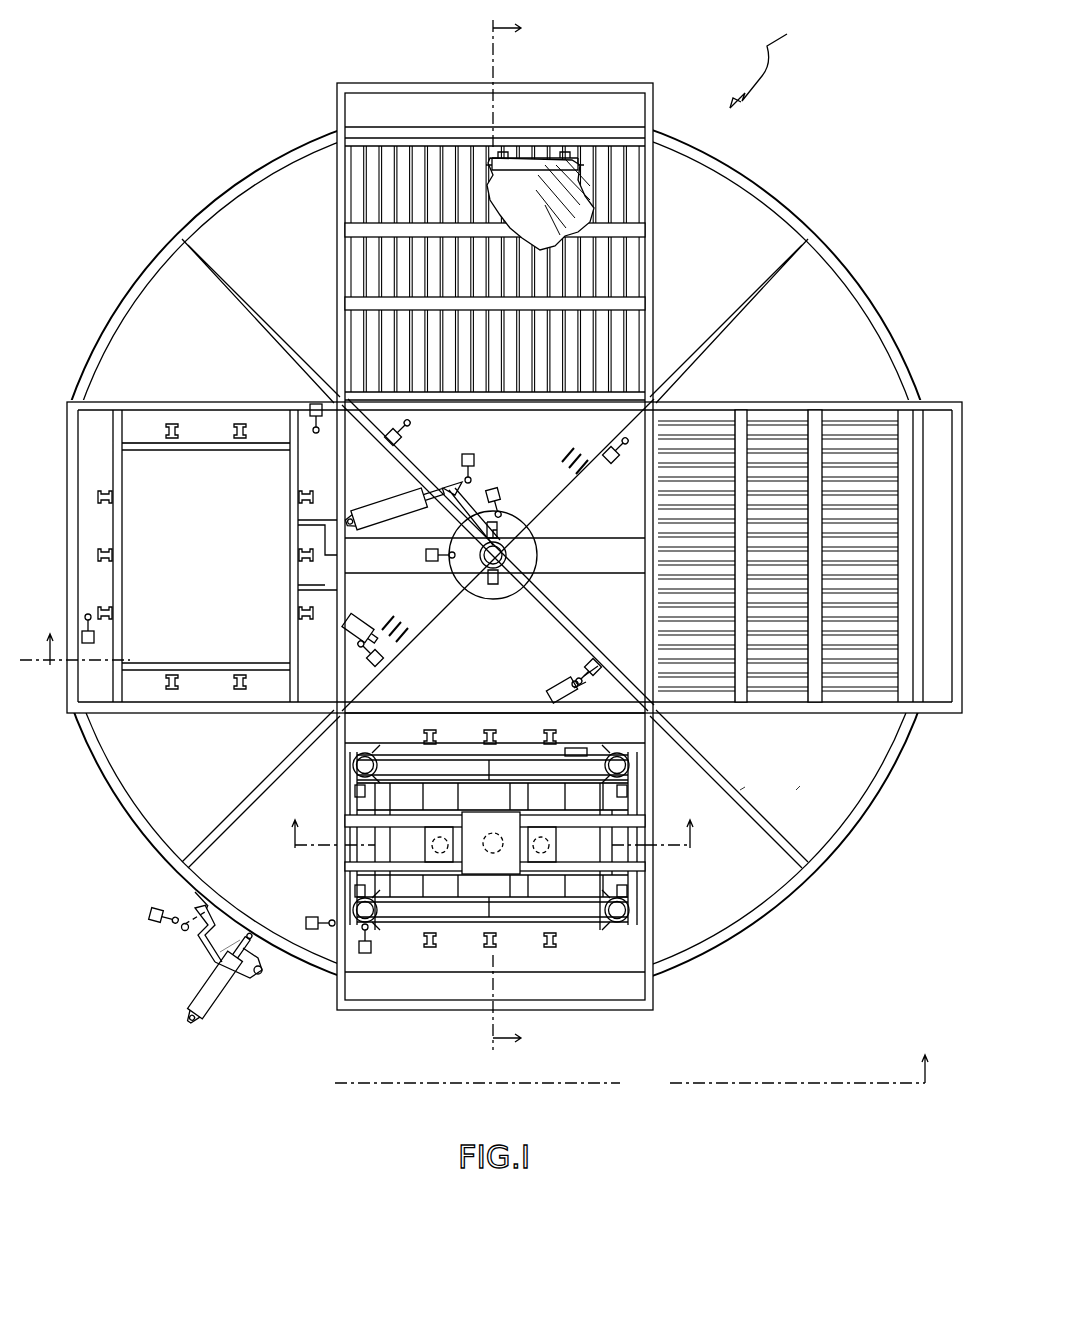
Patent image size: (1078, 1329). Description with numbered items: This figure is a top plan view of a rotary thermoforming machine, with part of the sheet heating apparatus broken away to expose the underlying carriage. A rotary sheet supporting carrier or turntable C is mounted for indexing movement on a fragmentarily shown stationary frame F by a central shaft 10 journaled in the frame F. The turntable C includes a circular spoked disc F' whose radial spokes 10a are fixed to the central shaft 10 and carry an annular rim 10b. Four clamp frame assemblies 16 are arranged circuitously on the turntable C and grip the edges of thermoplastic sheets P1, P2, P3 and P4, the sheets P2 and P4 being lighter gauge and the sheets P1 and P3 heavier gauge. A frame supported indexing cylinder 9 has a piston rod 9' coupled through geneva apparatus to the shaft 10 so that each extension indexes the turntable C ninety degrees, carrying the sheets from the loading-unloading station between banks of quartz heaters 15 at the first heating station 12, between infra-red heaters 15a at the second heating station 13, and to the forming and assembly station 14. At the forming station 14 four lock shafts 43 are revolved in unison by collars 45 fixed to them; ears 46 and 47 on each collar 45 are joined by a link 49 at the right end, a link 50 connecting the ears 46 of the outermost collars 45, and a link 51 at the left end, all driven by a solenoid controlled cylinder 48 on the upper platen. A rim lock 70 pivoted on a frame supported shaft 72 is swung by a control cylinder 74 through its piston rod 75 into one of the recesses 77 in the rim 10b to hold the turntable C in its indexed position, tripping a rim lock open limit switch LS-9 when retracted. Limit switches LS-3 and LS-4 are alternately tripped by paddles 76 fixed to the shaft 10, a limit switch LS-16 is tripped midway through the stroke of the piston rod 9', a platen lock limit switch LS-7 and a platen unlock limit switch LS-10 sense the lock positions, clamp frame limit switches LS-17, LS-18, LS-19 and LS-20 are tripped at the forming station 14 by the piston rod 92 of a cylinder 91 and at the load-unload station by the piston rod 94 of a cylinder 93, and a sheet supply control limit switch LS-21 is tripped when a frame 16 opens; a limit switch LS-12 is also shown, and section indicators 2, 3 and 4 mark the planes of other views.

The cylinder 9 is at (394, 500).
The piston rod 9' is at (462, 497).
The central shaft 10 is at (491, 568).
The radial spokes 10a is at (695, 756).
The annular rim 10b is at (871, 788).
The first sheet heating station 12 is at (322, 236).
The second sheet heating station 13 is at (817, 387).
The forming and assembly station 14 is at (683, 975).
The heating elements 15 is at (638, 177).
The heating elements 15a is at (770, 412).
The clamp frame assemblies 16 is at (217, 460).
The lock shafts 43 is at (365, 760).
The collars 45 is at (353, 765).
The ears 46 is at (610, 752).
The ears 47 is at (365, 756).
The cylinder 48 is at (575, 745).
The link 49 is at (602, 793).
The link 50 is at (465, 880).
The link 51 is at (368, 790).
The rim lock 70 is at (244, 963).
The shaft 72 is at (265, 972).
The control cylinder 74 is at (193, 999).
The piston rod 75 is at (212, 964).
The paddles 76 is at (520, 560).
The recesses 77 is at (208, 904).
The cylinder 91 is at (548, 690).
The piston rod 92 is at (577, 684).
The cylinder 93 is at (358, 626).
The piston rod 94 is at (364, 626).
The carrier C is at (769, 59).
The frame F is at (495, 574).
The spoked disc F' is at (760, 775).
The thermoplastic sheet P1 is at (230, 475).
The thermoplastic sheet P2 is at (560, 240).
The thermoplastic sheet P3 is at (856, 415).
The thermoplastic sheet P4 is at (576, 885).
The limit switch LS-3 is at (426, 556).
The limit switch LS-4 is at (497, 502).
The platen lock limit switch LS-7 is at (372, 946).
The rim lock open limit switch LS-9 is at (148, 915).
The platen unlock limit switch LS-10 is at (310, 913).
The limit switch LS-12 is at (316, 406).
The limit switch LS-16 is at (475, 454).
The clamp frame limit switch LS-17 is at (595, 662).
The clamp frame limit switch LS-18 is at (610, 458).
The clamp frame limit switch LS-19 is at (415, 433).
The clamp frame limit switch LS-20 is at (383, 653).
The sheet supply control limit switch LS-21 is at (95, 637).
The section line 2 is at (474, 846).
The section line 3 is at (518, 533).
The section line 4 is at (493, 819).